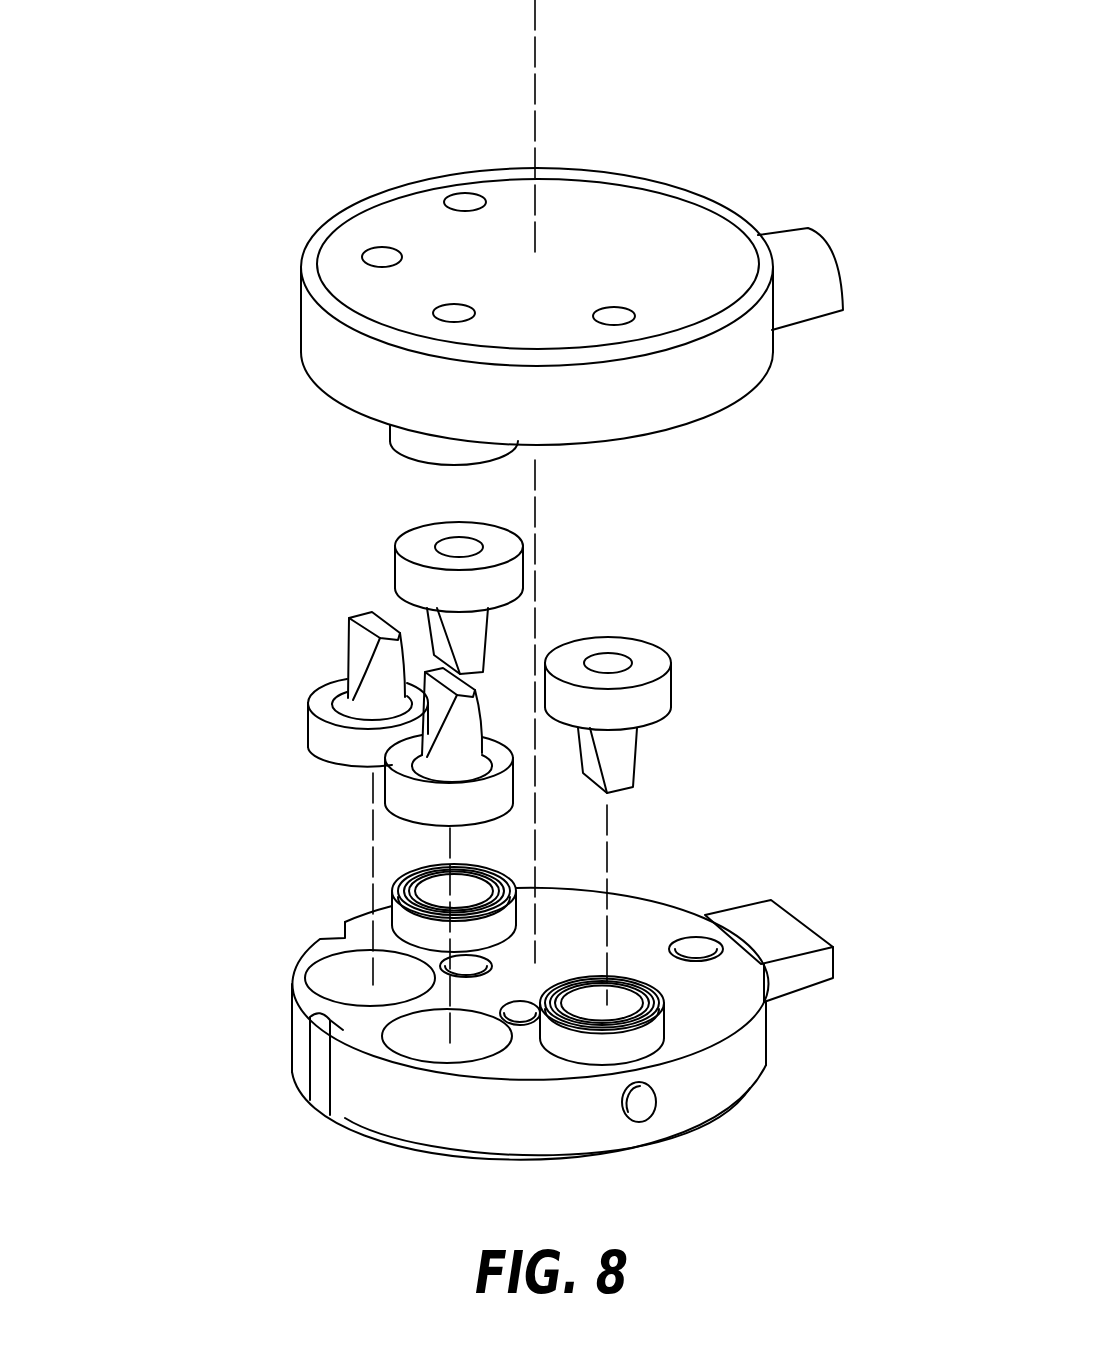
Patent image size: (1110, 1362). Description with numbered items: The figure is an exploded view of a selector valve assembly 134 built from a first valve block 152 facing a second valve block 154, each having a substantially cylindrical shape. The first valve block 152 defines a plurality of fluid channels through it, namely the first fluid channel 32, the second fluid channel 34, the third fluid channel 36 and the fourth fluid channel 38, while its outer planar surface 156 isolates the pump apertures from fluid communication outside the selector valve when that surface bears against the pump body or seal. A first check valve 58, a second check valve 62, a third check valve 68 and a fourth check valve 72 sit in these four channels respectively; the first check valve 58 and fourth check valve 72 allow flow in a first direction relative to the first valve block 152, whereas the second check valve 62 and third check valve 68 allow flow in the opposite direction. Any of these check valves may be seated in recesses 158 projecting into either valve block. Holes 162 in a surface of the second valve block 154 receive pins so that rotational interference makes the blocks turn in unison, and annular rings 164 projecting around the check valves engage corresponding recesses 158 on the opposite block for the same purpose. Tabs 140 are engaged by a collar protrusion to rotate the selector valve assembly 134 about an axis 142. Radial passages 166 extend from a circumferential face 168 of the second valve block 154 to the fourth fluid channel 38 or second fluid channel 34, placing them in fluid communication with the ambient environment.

The selector valve assembly 134 is at (166, 146).
The axis 142 is at (540, 36).
The first fluid channel 32 is at (457, 193).
The second fluid channel 34 is at (362, 250).
The third fluid channel 36 is at (443, 316).
The fourth fluid channel 38 is at (620, 322).
The outer planar surface 156 is at (615, 233).
The tabs 140 is at (844, 262).
The first valve block 152 is at (730, 373).
The first check valve 58 is at (395, 578).
The second check valve 62 is at (308, 720).
The third check valve 68 is at (385, 800).
The fourth check valve 72 is at (667, 714).
The second valve block 154 is at (708, 1087).
The recesses 158 is at (463, 893).
The holes 162 is at (698, 948).
The annular rings 164 is at (403, 457).
The radial passages 166 is at (640, 1112).
The circumferential face 168 is at (523, 1117).